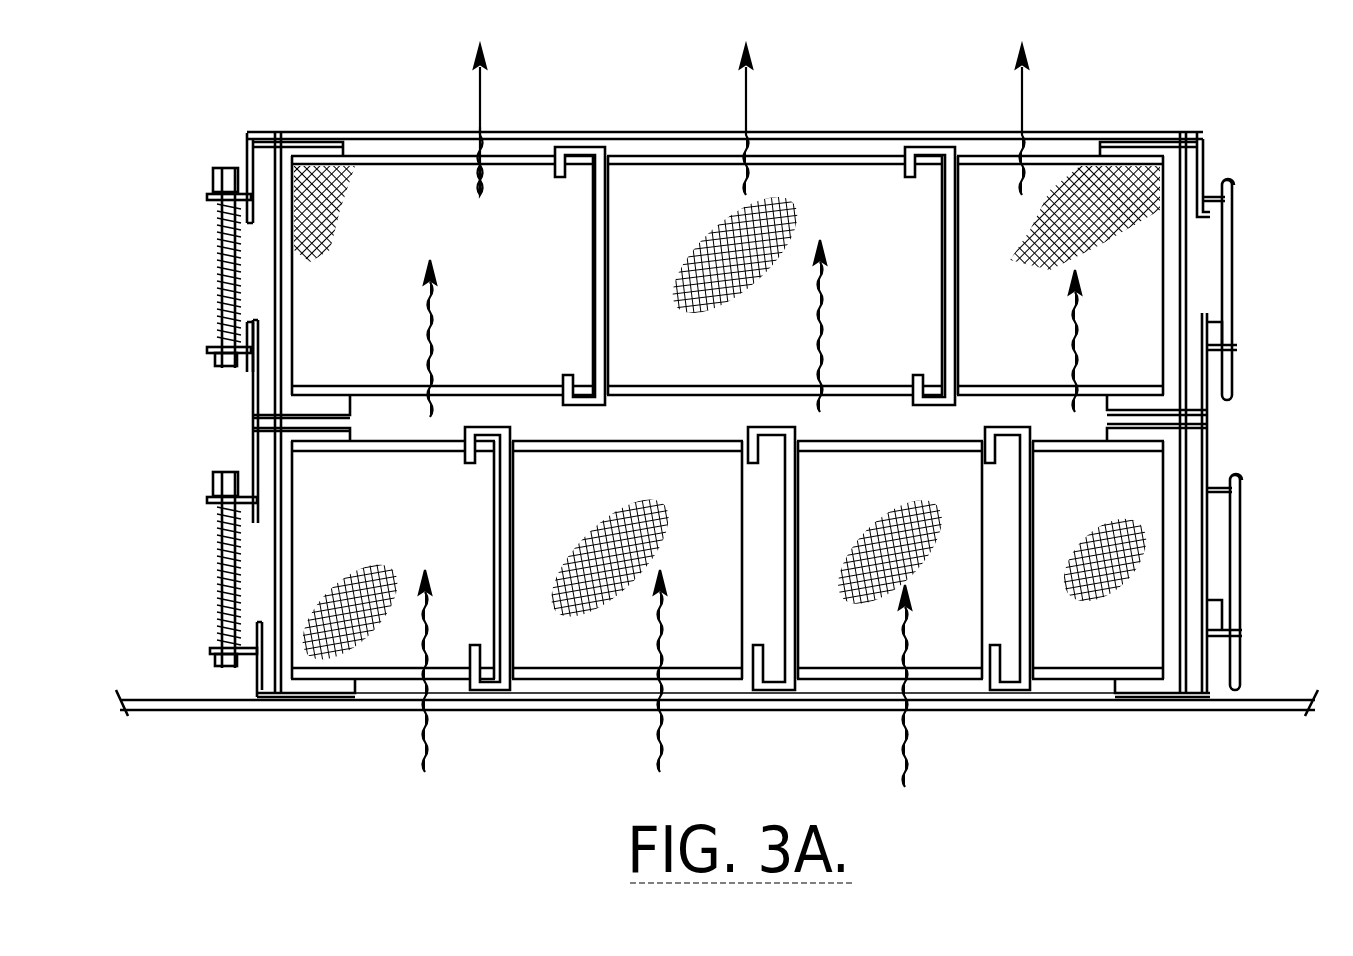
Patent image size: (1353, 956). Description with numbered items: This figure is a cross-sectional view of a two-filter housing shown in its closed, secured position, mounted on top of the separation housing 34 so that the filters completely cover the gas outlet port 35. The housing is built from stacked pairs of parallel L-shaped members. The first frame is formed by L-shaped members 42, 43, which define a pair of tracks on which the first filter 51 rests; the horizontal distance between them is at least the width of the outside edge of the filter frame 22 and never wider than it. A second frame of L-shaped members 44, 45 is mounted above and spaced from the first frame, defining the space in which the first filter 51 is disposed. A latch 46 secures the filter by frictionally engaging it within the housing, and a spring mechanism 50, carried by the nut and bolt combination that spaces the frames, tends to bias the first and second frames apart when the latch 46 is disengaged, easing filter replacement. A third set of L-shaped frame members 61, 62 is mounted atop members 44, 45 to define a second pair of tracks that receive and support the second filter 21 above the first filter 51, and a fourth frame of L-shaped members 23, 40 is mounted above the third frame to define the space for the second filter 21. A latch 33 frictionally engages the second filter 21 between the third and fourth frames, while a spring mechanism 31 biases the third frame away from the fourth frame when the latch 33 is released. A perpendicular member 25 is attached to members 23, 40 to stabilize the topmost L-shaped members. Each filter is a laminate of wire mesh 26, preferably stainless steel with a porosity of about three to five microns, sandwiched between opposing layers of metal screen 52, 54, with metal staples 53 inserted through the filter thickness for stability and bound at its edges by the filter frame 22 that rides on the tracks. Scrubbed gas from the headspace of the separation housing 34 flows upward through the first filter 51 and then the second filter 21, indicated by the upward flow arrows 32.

The second filter 21 is at (711, 140).
The filter frame 22 is at (1167, 150).
The L-shaped member 23 is at (1208, 158).
The perpendicular member 25 is at (1065, 131).
The wire mesh 26 is at (800, 202).
The spring mechanism 31 is at (200, 292).
The air flow 32 is at (482, 100).
The latch 33 is at (1255, 236).
The separation housing 34 is at (195, 712).
The gas outlet port 35 is at (500, 702).
The L-shaped member 40 is at (250, 160).
The L-shaped member 42 is at (1205, 668).
The L-shaped member 43 is at (258, 688).
The L-shaped member 44 is at (1208, 434).
The L-shaped member 45 is at (255, 432).
The latch 46 is at (1265, 560).
The spring mechanism 50 is at (196, 575).
The first filter 51 is at (385, 686).
The metal screen 52 is at (1050, 384).
The metal staples 53 is at (610, 192).
The metal screen 54 is at (848, 140).
The L-shaped frame member 61 is at (1205, 398).
The L-shaped frame member 62 is at (255, 405).